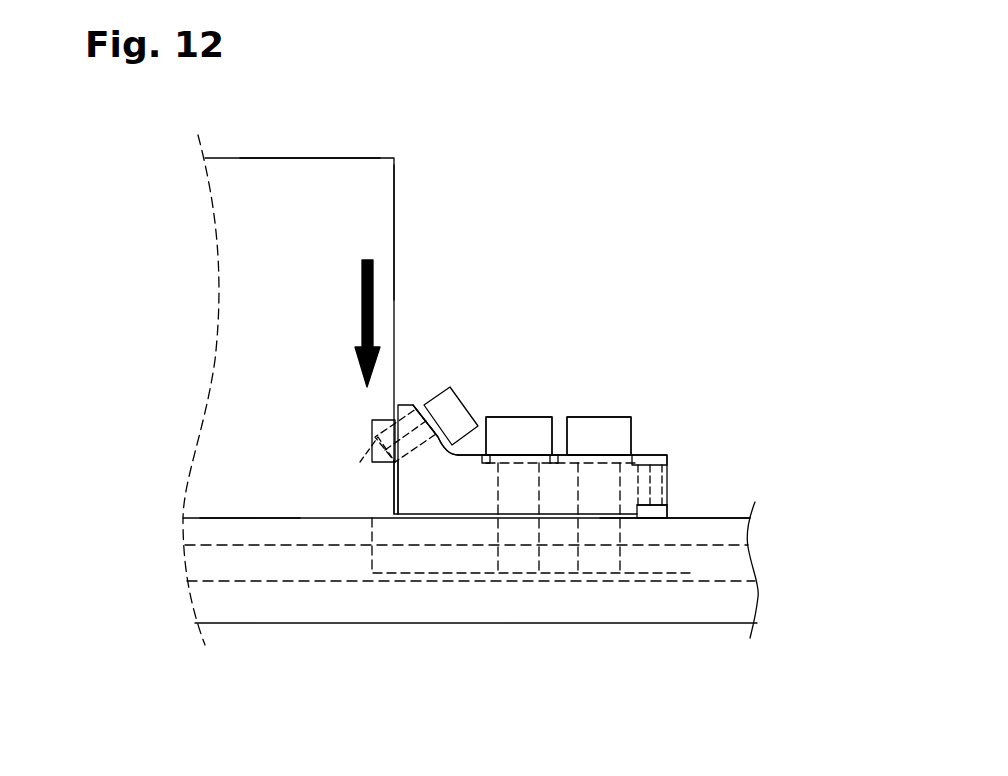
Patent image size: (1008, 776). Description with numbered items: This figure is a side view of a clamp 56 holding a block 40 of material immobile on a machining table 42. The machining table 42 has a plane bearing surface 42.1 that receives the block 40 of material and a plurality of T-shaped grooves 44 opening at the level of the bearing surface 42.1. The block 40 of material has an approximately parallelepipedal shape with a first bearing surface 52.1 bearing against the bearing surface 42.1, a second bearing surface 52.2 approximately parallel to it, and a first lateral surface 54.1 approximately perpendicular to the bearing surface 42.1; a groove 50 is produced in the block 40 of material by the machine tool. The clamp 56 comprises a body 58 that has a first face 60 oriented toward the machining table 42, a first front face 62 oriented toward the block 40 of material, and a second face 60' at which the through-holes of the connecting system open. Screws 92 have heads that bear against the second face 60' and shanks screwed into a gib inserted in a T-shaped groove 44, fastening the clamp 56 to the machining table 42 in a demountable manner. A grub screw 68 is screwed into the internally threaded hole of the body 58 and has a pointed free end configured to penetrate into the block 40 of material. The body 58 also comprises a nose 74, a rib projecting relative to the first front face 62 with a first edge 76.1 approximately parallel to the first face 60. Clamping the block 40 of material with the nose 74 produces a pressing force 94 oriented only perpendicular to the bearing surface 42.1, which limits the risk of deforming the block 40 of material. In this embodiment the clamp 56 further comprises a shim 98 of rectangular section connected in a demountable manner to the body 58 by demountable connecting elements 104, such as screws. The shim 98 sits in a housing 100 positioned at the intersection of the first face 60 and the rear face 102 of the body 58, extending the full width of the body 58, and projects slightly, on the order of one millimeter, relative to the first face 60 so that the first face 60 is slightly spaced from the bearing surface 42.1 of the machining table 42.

The block of material 40 is at (277, 205).
The machining table 42 is at (262, 628).
The bearing surface 42.1 is at (740, 519).
The T-shaped grooves 44 is at (750, 560).
The groove 50 is at (380, 420).
The first bearing surface 52.1 is at (307, 157).
The second bearing surface 52.2 is at (238, 518).
The first lateral surface 54.1 is at (397, 212).
The clamp 56 is at (575, 332).
The body 58 is at (590, 487).
The first face 60 is at (531, 535).
The second face 60' is at (471, 412).
The first front face 62 is at (393, 497).
The grub screw 68 is at (478, 370).
The nose 74 is at (350, 423).
The first edge 76.1 is at (378, 463).
The screw 92 is at (553, 405).
The pressing force 94 is at (397, 285).
The shim 98 is at (678, 506).
The housing 100 is at (653, 518).
The rear face 102 is at (667, 483).
The demountable connecting elements 104 is at (652, 460).